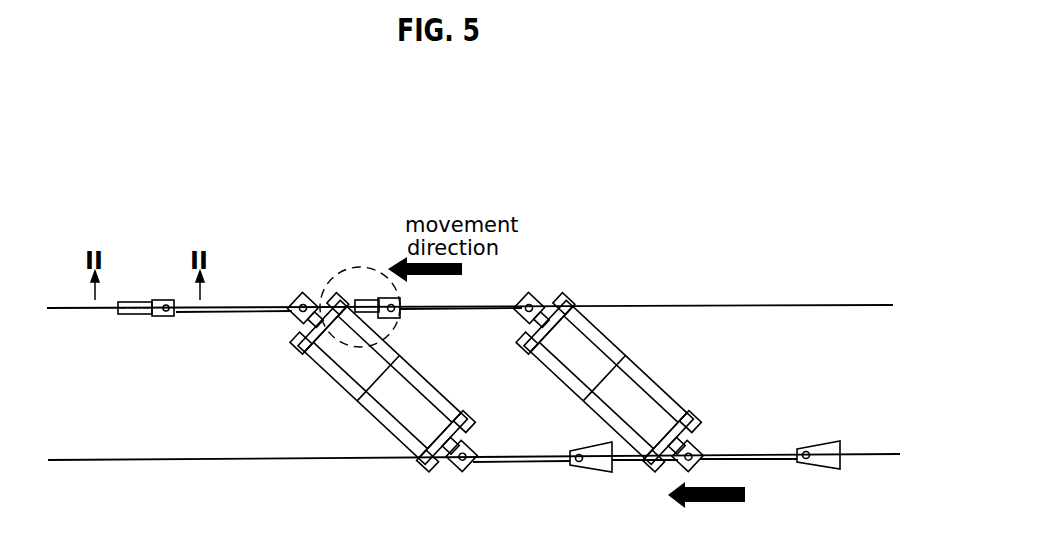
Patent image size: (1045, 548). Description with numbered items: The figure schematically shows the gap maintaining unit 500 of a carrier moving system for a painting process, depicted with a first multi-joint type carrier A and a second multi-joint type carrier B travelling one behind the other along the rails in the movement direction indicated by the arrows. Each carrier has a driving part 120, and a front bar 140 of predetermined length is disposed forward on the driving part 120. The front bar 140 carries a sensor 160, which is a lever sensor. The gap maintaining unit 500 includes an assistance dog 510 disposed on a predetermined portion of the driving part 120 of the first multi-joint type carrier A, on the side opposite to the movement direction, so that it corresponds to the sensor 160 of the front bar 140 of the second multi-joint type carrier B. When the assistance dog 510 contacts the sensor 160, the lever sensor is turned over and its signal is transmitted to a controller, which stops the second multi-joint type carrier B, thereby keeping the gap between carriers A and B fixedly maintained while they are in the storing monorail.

The driving part 120 is at (308, 297).
The front bar 140 is at (483, 303).
The sensor 160 is at (388, 316).
The gap maintaining unit 500 is at (364, 267).
The assistance dog 510 is at (353, 293).
The first multi-joint type carrier A is at (348, 399).
The second multi-joint type carrier B is at (571, 404).